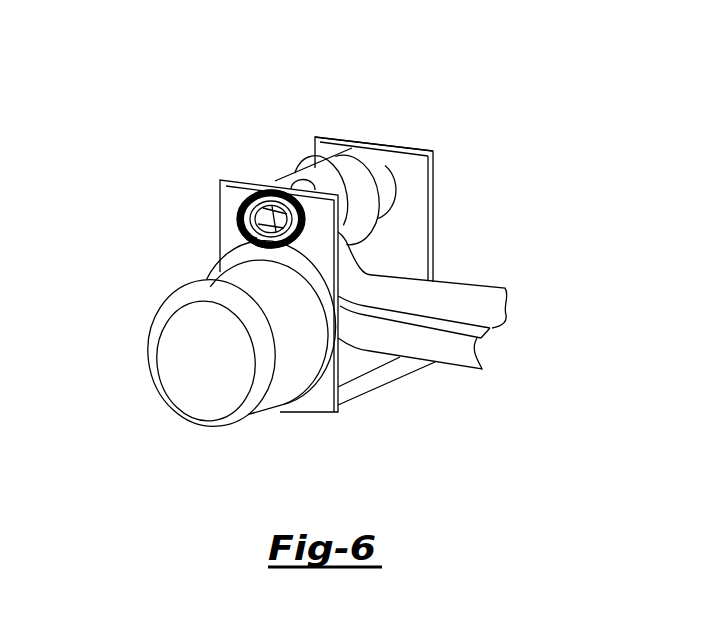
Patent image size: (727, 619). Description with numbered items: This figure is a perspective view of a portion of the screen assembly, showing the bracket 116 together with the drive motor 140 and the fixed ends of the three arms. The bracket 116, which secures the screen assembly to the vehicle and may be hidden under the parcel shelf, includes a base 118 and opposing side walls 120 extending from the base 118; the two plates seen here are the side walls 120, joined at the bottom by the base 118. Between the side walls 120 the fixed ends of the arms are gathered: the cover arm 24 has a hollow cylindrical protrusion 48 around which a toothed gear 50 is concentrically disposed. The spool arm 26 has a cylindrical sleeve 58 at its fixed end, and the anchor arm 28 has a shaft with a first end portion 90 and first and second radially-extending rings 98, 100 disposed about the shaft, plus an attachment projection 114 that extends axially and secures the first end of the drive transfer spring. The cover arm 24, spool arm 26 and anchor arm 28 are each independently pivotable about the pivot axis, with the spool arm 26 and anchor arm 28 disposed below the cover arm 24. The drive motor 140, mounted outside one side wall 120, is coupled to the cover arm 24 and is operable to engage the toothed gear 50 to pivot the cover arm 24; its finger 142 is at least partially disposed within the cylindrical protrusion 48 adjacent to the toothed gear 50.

The cover arm 24 is at (494, 305).
The spool arm 26 is at (489, 337).
The anchor arm 28 is at (464, 349).
The cylindrical protrusion 48 is at (264, 190).
The toothed gear 50 is at (304, 216).
The cylindrical sleeve 58 is at (333, 158).
The first end portion 90 is at (392, 185).
The first radially-extending ring 98 is at (350, 158).
The second radially-extending ring 100 is at (309, 166).
The attachment projection 114 is at (240, 220).
The bracket 116 is at (425, 150).
The base 118 is at (343, 398).
The side walls 120 is at (233, 190).
The drive motor 140 is at (175, 373).
The finger 142 is at (257, 238).